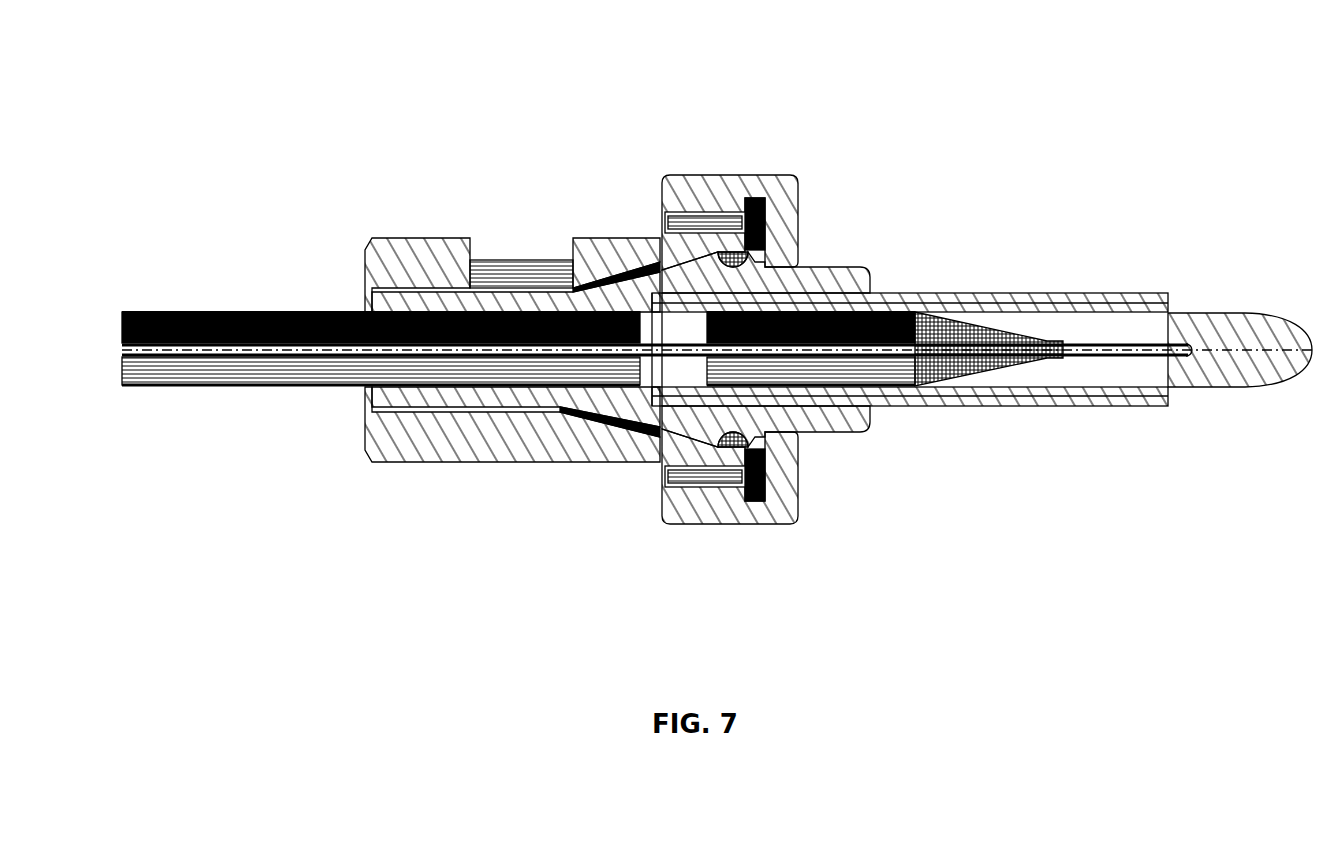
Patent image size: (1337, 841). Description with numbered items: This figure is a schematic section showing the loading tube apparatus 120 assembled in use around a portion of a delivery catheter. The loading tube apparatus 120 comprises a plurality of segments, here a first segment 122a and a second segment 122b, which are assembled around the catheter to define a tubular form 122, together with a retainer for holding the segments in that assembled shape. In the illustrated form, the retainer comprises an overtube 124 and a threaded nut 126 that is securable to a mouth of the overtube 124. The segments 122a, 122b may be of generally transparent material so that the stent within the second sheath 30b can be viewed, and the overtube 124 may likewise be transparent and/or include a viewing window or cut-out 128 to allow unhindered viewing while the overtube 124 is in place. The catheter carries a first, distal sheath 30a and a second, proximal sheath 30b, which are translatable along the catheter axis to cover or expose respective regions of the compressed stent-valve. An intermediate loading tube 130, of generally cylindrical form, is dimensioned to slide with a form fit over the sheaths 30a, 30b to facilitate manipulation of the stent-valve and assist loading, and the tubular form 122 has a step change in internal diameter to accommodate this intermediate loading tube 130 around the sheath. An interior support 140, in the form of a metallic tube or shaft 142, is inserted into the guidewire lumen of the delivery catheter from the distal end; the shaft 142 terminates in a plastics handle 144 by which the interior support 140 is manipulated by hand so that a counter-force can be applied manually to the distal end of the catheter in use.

The loading tube apparatus 120 is at (717, 317).
The tubular form 122 is at (830, 268).
The first segment 122a is at (432, 302).
The second segment 122b is at (470, 400).
The overtube 124 is at (368, 462).
The threaded nut 126 is at (753, 190).
The viewing window or cut-out 128 is at (578, 238).
The intermediate loading tube 130 is at (1112, 292).
The interior support 140 is at (1242, 293).
The metallic tube or shaft 142 is at (345, 347).
The plastics handle 144 is at (1240, 387).
The first sheath 30a is at (901, 385).
The second sheath 30b is at (240, 310).